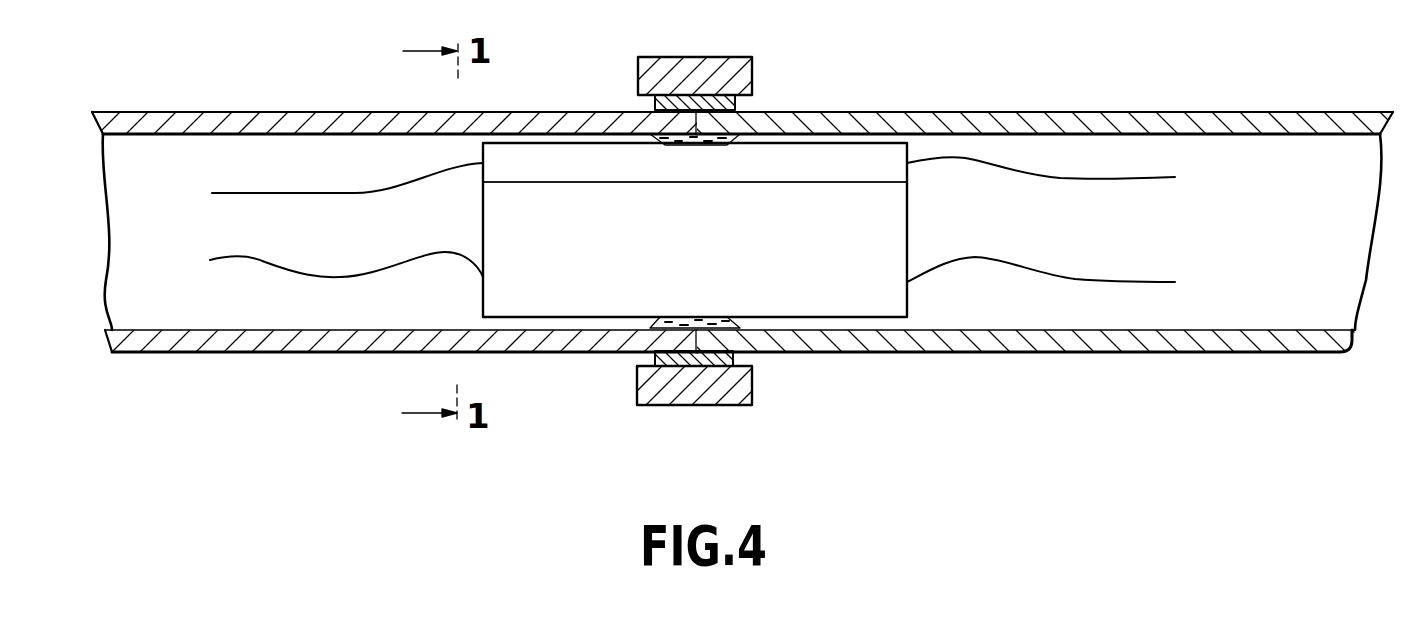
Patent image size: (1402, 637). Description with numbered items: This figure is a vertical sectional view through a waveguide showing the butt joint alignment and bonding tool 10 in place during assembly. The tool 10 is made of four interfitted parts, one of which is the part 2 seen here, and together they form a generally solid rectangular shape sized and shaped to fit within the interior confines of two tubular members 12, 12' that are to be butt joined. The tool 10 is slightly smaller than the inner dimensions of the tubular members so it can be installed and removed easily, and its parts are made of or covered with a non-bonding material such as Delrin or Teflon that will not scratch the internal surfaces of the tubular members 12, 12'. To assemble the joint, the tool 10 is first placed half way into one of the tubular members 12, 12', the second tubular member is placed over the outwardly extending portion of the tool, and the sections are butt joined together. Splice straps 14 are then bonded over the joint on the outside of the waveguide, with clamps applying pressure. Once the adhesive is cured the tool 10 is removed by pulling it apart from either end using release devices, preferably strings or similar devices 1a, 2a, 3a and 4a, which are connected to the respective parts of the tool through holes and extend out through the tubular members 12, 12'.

The splice strap 14 is at (705, 57).
The butt joint alignment and bonding tool 10 is at (785, 201).
The tubular member 12 is at (1041, 205).
The tubular member 12' is at (389, 205).
The release device 1a is at (1005, 168).
The release device 2a is at (1105, 280).
The release device 3a is at (245, 193).
The release device 4a is at (340, 277).
The tool part 2 is at (597, 292).